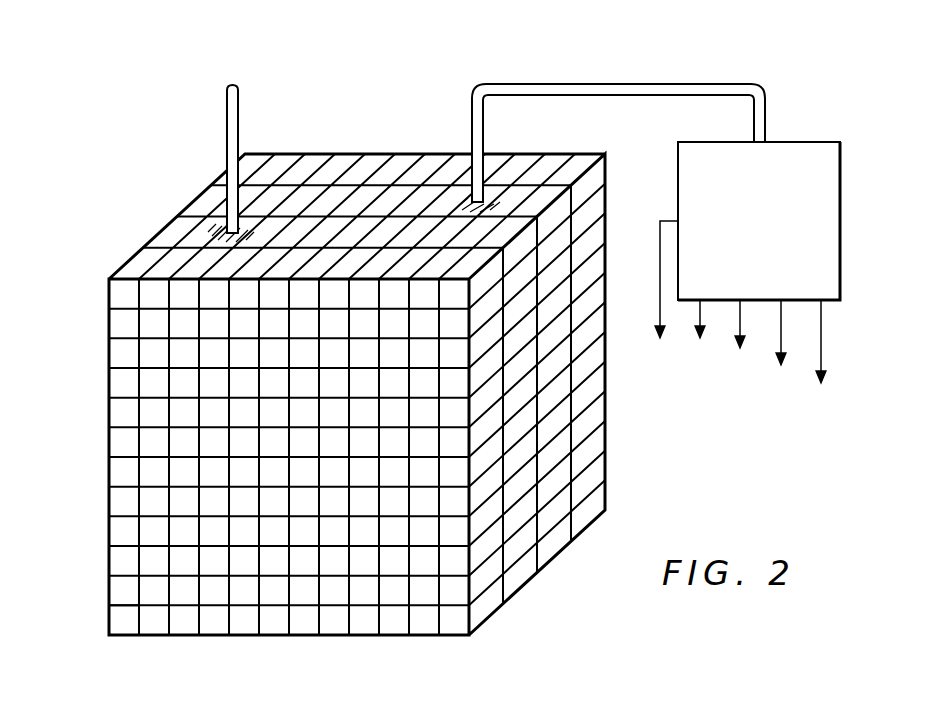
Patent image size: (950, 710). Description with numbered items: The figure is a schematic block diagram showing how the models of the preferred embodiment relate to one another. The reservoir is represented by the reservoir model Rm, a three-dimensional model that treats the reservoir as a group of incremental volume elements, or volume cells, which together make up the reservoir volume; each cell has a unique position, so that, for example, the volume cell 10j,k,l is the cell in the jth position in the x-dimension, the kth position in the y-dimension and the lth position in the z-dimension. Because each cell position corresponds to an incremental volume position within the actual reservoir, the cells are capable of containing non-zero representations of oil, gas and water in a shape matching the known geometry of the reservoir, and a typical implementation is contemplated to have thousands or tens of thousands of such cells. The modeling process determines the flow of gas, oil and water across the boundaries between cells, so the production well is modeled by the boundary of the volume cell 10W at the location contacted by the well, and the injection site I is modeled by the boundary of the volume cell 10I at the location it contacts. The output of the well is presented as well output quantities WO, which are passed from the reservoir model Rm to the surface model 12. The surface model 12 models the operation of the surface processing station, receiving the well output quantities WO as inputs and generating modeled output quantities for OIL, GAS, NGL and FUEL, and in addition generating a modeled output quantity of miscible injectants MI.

The reservoir model Rm is at (528, 580).
The volume cell 10j,k,l is at (143, 562).
The volume cell 10I is at (218, 232).
The injection site I is at (230, 81).
The volume cell 10W is at (466, 198).
The well output quantities WO is at (619, 84).
The surface model 12 is at (803, 140).
The miscible injectants MI is at (664, 290).
The oil output quantity OIL is at (700, 330).
The gas output quantity GAS is at (743, 335).
The NGL output quantity NGL is at (781, 343).
The fuel output quantity FUEL is at (822, 353).